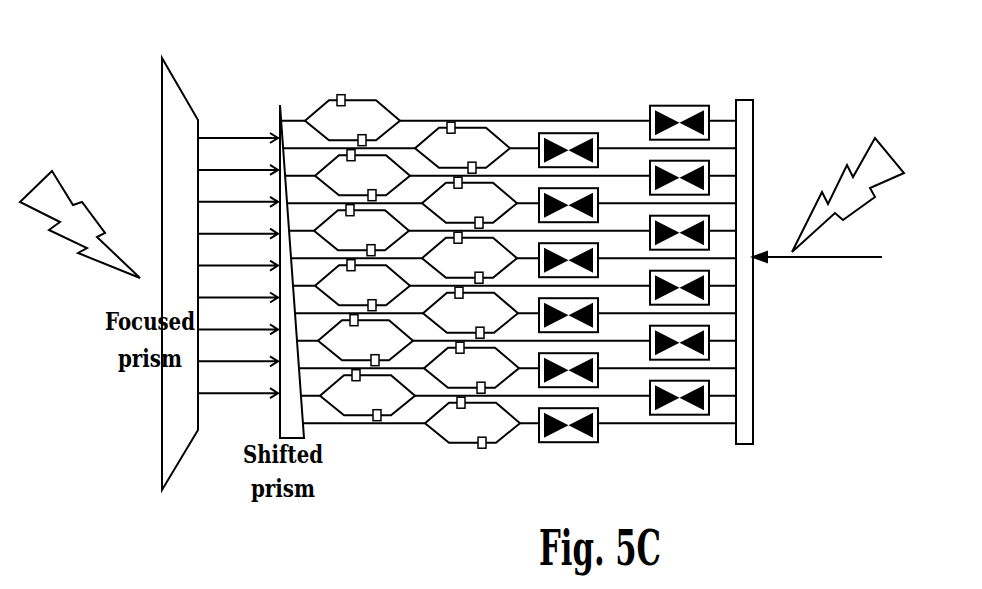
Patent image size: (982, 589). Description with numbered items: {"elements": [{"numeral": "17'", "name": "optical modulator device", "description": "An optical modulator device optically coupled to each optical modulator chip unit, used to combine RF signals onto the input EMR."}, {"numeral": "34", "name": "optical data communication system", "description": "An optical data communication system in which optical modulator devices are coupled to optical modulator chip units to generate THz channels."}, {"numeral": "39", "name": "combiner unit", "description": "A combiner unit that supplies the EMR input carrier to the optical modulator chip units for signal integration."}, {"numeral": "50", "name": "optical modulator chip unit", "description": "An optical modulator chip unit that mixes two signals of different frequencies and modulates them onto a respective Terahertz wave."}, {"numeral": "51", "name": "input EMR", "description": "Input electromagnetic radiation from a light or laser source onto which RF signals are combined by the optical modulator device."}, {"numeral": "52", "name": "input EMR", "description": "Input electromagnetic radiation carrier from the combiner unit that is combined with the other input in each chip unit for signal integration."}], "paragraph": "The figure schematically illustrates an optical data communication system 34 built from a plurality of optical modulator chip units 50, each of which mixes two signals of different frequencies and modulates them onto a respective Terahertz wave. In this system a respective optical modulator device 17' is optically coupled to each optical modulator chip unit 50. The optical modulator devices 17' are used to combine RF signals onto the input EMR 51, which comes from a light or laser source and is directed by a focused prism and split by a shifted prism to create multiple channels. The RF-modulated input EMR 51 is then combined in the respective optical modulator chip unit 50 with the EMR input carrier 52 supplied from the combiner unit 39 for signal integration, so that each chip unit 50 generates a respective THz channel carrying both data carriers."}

The Mach-Zehnder interferometer phase shifters 17' is at (423, 244).
The photonic integrated circuit chip 34 is at (412, 492).
The output waveguide bar 39 is at (755, 157).
The modulators 50 is at (675, 106).
The input light 51 is at (80, 224).
The output light 52 is at (828, 200).